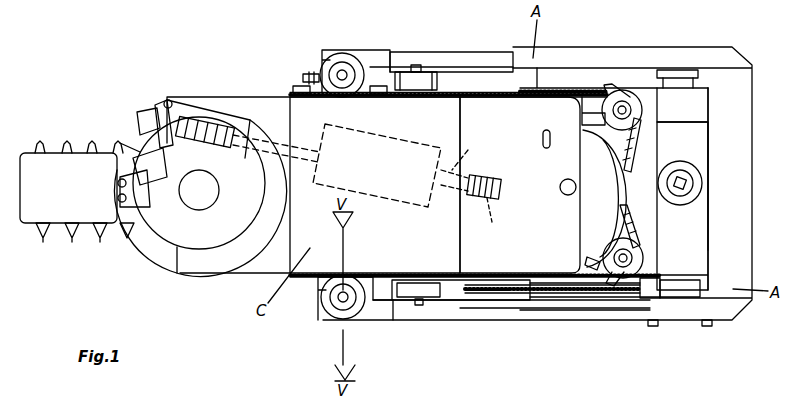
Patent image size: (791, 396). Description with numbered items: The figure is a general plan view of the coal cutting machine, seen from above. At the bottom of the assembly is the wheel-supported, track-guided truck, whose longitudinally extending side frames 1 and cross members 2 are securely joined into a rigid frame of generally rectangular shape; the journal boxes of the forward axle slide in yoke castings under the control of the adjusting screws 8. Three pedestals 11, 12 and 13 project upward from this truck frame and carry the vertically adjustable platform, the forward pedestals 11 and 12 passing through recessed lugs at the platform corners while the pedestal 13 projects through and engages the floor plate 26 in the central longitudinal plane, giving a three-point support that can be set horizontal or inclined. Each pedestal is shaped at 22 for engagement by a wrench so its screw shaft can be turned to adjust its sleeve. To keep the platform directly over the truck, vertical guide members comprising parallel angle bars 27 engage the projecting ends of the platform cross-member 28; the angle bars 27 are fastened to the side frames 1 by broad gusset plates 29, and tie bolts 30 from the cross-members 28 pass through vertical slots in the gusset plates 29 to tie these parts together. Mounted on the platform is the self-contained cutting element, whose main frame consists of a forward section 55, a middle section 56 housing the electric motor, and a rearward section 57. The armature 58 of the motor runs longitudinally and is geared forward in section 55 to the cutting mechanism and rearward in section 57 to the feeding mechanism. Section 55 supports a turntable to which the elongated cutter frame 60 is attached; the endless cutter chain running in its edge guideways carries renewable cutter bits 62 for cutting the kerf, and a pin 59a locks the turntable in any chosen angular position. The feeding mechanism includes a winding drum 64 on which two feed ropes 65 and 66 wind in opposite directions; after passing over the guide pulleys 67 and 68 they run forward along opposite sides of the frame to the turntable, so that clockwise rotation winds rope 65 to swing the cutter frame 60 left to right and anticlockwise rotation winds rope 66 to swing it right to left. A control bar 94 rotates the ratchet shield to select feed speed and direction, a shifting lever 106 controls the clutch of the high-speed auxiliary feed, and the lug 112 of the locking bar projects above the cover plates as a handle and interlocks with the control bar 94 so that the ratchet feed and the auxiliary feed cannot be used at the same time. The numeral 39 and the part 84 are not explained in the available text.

The side frame 1 is at (632, 56).
The cross member 2 is at (684, 80).
The adjusting screw 8 is at (306, 76).
The pedestal 11 is at (357, 58).
The pedestal 12 is at (333, 308).
The pedestal 13 is at (683, 108).
The wrench engagement 22 is at (342, 73).
The floor plate 26 is at (692, 148).
The angle bar 27 is at (430, 66).
The cross-member 28 is at (412, 284).
The gusset plate 29 is at (477, 298).
The tie bolt 30 is at (414, 64).
The frame upright 39 is at (742, 200).
The forward frame section 55 is at (263, 108).
The middle frame section 56 is at (372, 117).
The rearward frame section 57 is at (497, 118).
The armature 58 is at (465, 164).
The pin 59a is at (119, 199).
The cutter frame 60 is at (60, 173).
The cutter bit 62 is at (100, 241).
The winding drum 64 is at (606, 195).
The feed rope 65 is at (638, 147).
The feed rope 66 is at (634, 225).
The guide pulley 67 is at (627, 96).
The guide pulley 68 is at (633, 258).
The gear 84 is at (485, 210).
The control bar 94 is at (593, 113).
The shifting lever 106 is at (596, 265).
The lug 112 is at (545, 132).